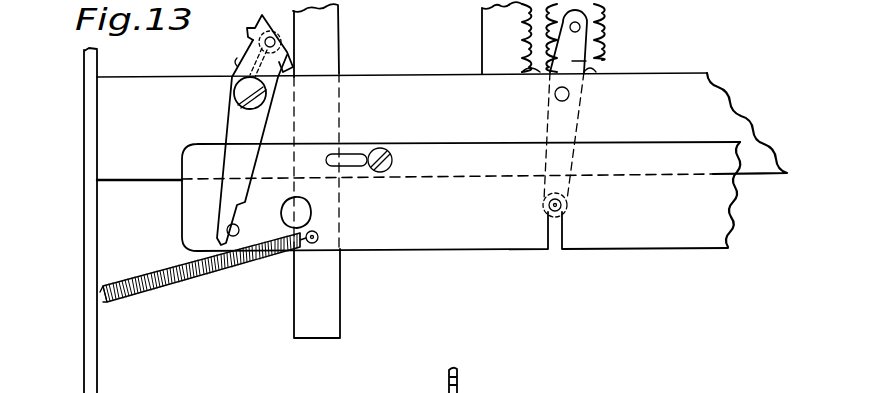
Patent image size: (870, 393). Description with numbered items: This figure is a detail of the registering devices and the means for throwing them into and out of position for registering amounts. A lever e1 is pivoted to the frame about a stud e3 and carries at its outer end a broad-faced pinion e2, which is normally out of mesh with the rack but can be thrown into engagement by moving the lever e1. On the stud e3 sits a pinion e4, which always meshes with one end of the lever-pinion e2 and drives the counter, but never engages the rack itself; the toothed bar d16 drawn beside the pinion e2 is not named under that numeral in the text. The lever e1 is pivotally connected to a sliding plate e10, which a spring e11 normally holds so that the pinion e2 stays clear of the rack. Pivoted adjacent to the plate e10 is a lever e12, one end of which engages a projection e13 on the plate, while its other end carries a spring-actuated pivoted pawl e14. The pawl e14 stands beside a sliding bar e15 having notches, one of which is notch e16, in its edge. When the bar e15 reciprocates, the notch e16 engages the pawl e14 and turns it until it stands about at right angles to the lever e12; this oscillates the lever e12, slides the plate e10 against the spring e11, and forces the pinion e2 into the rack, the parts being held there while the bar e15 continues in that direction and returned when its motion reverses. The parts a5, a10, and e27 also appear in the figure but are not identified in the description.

The frame wall a5 is at (92, 362).
The bracket a10 is at (448, 384).
The rack bar d16 is at (511, 38).
The lever e1 is at (586, 61).
The lever-pinion e2 is at (596, 22).
The stud e3 is at (569, 96).
The pinion e4 is at (546, 72).
The sliding bar or plate e10 is at (461, 196).
The spring e11 is at (176, 280).
The lever e12 is at (237, 122).
The projection e13 is at (238, 224).
The spring-actuated pivoted pawl e14 is at (255, 32).
The sliding bar e15 is at (317, 293).
The notch e16 is at (294, 69).
The cam e27 is at (298, 212).